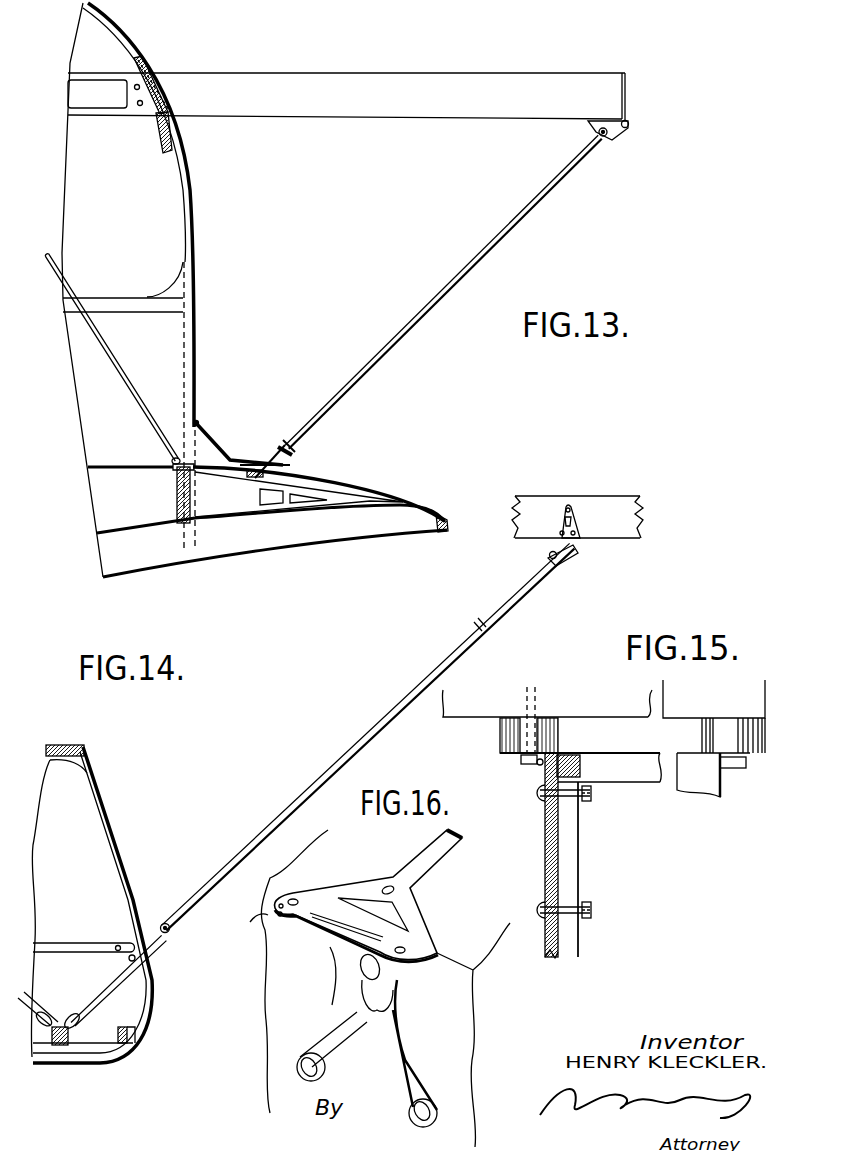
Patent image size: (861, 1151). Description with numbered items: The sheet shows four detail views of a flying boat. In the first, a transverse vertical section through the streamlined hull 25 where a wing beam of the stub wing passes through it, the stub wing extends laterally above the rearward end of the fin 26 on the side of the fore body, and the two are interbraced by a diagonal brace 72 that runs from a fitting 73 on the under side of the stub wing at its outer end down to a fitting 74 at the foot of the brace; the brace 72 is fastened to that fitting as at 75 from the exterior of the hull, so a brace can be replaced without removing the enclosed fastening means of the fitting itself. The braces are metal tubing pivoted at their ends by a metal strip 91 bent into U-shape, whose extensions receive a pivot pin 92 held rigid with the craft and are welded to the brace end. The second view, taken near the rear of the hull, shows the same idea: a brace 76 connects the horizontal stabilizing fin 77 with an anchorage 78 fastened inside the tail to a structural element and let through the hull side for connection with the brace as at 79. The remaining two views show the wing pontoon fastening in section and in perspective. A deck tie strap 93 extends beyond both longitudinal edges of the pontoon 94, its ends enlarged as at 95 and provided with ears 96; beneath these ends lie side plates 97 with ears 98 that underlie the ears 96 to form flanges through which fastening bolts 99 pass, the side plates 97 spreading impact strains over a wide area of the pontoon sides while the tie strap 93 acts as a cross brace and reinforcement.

In FIG. 13, the hull 25 is at (193, 277).
In FIG. 13, the fin 26 is at (323, 537).
In FIG. 13, the diagonal brace 72 is at (433, 302).
In FIG. 13, the fitting 73 is at (613, 127).
In FIG. 13, the fitting 74 is at (277, 460).
In FIG. 13, the brace fastening 75 is at (277, 453).
In FIG. 14, the brace 76 is at (343, 770).
In FIG. 14, the horizontal stabilizing fin 77 is at (615, 507).
In FIG. 14, the anchorage 78 is at (113, 985).
In FIG. 14, the brace connection 79 is at (163, 922).
In FIG. 13, the metal strip 91 is at (175, 460).
In FIG. 13, the pivot pin 92 is at (173, 472).
In FIG. 15, the deck tie strap 93 is at (618, 753).
In FIG. 16, the deck tie strap 93 is at (438, 855).
In FIG. 15, the pontoon 94 is at (558, 848).
In FIG. 16, the pontoon 94 is at (467, 1053).
In FIG. 15, the enlarged end 95 is at (563, 753).
In FIG. 16, the enlarged end 95 is at (422, 935).
In FIG. 15, the ear 96 is at (502, 757).
In FIG. 16, the ear 96 is at (277, 912).
In FIG. 15, the side plate 97 is at (558, 817).
In FIG. 16, the side plate 97 is at (387, 997).
In FIG. 15, the ear 98 is at (540, 762).
In FIG. 16, the ear 98 is at (277, 950).
In FIG. 15, the fastening bolt 99 is at (537, 695).